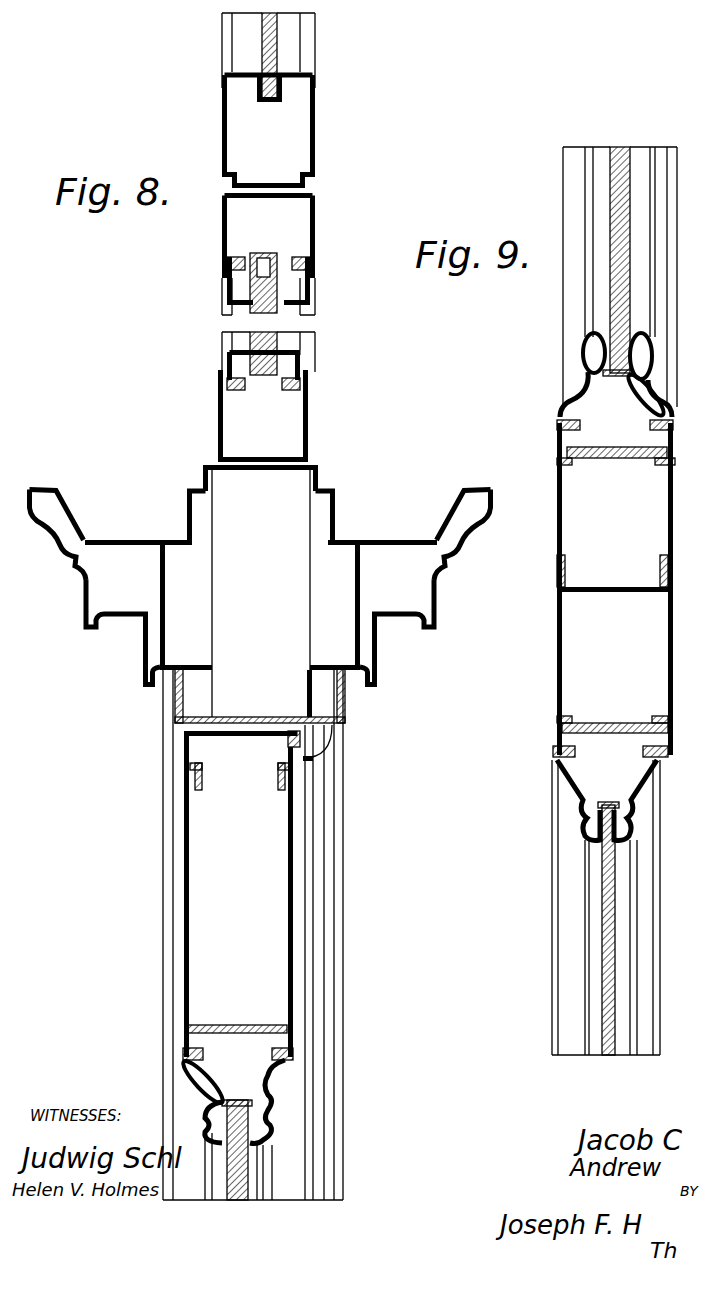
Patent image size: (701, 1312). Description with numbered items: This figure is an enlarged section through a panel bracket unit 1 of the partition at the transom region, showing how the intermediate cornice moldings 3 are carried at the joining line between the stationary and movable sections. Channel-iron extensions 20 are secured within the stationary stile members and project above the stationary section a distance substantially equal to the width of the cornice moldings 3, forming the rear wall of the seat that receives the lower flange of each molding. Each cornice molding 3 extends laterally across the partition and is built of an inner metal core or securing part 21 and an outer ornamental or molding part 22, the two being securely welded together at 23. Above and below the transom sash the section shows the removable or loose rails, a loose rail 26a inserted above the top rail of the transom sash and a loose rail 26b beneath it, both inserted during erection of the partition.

In FIG. 9, the panel bracket unit 1 is at (625, 275).
In FIG. 8, the intermediate cornice molding 3 is at (260, 587).
In FIG. 8, the channel-iron extension 20 is at (300, 535).
In FIG. 8, the inner metal core or securing part 21 is at (165, 610).
In FIG. 8, the outer ornamental or molding part 22 is at (68, 560).
In FIG. 8, the weld 23 is at (180, 538).
In FIG. 8, the removable or loose rail 26a is at (315, 150).
In FIG. 8, the loose rail 26b is at (318, 478).